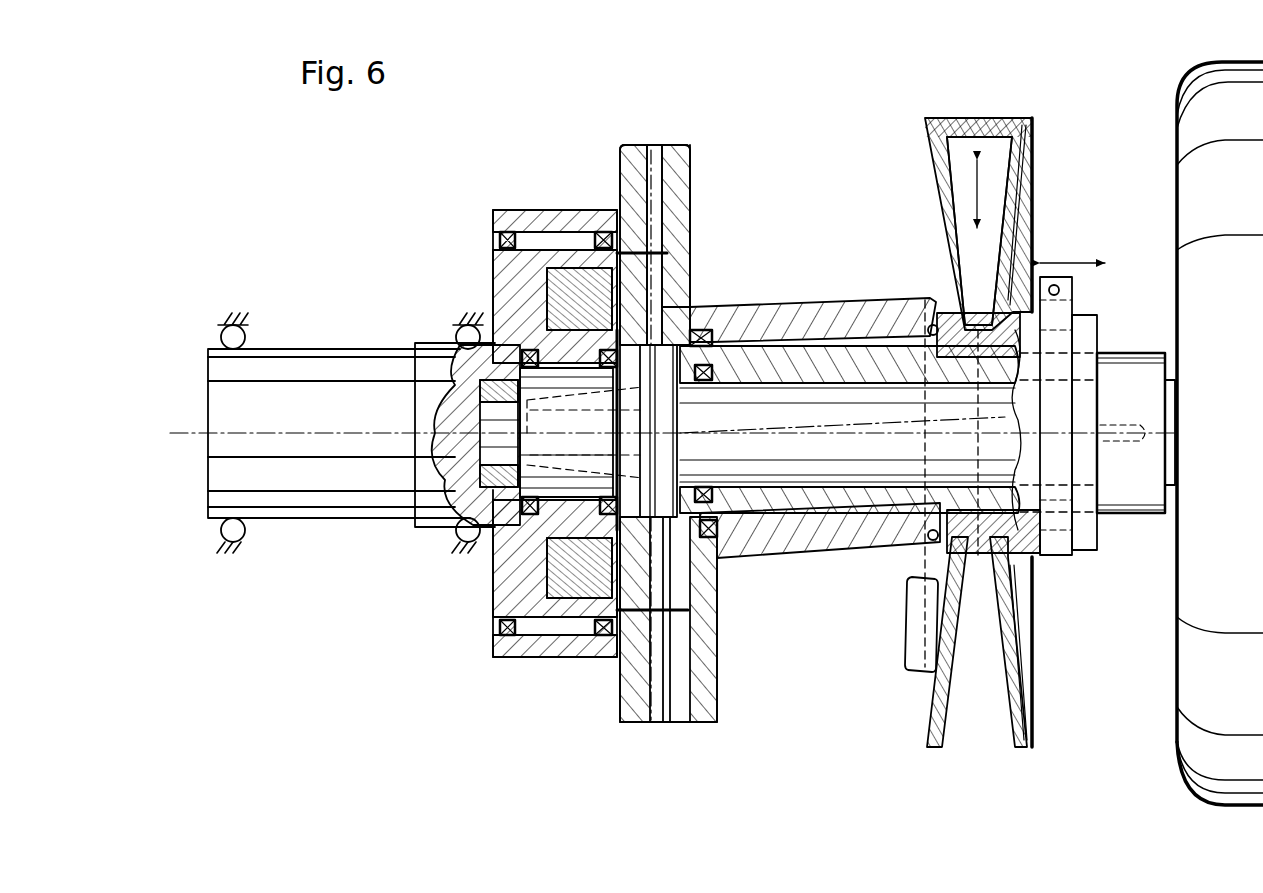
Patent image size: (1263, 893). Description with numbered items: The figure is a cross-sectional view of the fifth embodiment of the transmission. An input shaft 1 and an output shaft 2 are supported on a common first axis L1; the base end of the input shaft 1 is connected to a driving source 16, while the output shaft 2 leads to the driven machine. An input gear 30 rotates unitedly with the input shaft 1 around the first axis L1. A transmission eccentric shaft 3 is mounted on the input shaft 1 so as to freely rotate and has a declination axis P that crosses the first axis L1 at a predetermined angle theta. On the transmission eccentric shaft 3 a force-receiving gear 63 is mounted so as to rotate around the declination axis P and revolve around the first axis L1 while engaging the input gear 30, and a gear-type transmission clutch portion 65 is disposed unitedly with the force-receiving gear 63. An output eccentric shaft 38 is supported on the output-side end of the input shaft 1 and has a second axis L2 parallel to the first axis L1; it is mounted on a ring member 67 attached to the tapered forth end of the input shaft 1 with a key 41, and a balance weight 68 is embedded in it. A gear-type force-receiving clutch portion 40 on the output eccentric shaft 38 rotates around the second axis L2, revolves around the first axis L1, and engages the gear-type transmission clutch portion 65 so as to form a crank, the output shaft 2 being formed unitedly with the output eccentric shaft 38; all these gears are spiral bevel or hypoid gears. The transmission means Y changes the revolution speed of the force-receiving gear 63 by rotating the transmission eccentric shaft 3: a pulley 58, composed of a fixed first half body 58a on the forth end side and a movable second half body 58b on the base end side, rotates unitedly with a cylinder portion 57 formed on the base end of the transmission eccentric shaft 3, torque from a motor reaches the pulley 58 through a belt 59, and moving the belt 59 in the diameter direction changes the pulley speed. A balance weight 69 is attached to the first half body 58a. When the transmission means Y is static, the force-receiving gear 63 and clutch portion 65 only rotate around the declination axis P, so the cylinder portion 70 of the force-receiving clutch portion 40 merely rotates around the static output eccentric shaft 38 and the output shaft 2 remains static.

The input shaft 1 is at (857, 490).
The output shaft 2 is at (310, 347).
The transmission eccentric shaft 3 is at (795, 333).
The driving source 16 is at (1175, 742).
The input gear 30 is at (672, 397).
The output eccentric shaft 38 is at (552, 623).
The gear-type force-receiving clutch portion 40 is at (630, 146).
The key 41 is at (575, 445).
The cylinder portion 57 is at (979, 231).
The pulley 58 is at (983, 669).
The first half body 58a is at (935, 748).
The second half body 58b is at (1012, 665).
The belt 59 is at (975, 116).
The force-receiving gear 63 is at (682, 273).
The gear-type transmission clutch portion 65 is at (678, 146).
The ring member 67 is at (555, 375).
The balance weight 68 is at (567, 300).
The balance weight 69 is at (903, 650).
The cylinder portion 70 is at (572, 660).
The declination axis P is at (885, 417).
The transmission means Y is at (1076, 148).
The first axis L1 is at (283, 433).
The second axis L2 is at (437, 523).
The predetermined angle theta is at (950, 398).